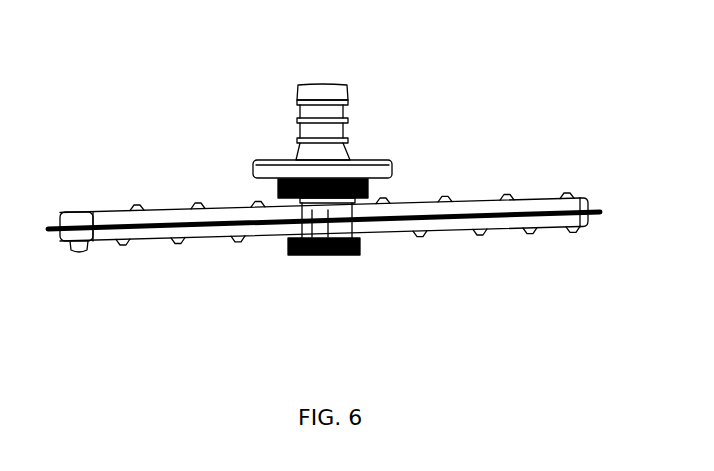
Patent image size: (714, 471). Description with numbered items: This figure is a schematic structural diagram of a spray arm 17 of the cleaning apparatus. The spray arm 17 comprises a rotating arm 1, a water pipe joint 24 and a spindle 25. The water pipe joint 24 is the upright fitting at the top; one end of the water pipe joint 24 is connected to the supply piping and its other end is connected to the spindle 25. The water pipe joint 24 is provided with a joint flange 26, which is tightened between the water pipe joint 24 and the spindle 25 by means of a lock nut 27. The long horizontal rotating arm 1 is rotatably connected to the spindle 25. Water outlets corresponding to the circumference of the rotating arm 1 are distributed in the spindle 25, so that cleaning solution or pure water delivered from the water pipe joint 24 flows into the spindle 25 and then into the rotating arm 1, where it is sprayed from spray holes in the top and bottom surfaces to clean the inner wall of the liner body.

The spray arm 17 is at (185, 122).
The rotating arm 1 is at (553, 232).
The water pipe joint 24 is at (345, 93).
The joint flange 26 is at (393, 168).
The lock nut 27 is at (280, 190).
The spindle 25 is at (342, 255).